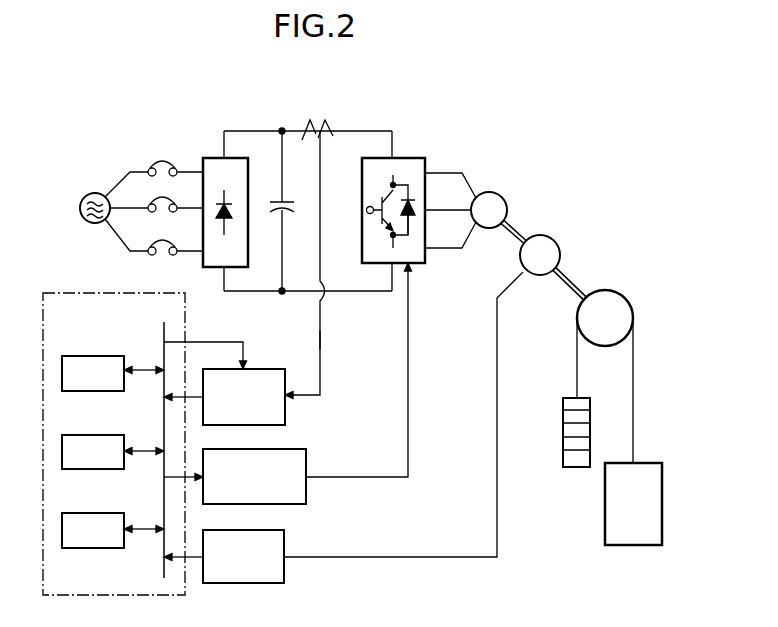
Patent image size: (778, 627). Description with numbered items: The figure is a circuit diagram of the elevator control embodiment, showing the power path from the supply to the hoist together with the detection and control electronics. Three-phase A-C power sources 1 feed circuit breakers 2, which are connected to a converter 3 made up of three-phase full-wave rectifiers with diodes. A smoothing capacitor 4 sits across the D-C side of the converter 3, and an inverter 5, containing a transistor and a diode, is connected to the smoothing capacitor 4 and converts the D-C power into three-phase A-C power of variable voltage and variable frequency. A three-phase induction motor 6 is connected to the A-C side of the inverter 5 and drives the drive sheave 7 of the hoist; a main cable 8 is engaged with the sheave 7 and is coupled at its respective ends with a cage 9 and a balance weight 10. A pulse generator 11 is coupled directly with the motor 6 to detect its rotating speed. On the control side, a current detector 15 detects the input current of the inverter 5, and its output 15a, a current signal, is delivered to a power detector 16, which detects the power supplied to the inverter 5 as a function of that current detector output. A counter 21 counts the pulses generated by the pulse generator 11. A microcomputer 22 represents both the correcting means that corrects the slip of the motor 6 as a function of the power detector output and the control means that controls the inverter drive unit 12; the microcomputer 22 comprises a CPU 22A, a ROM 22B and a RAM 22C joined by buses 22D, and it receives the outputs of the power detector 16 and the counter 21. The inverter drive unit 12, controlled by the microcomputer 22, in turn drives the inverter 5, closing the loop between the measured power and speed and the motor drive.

The three-phase A-C power sources 1 is at (95, 193).
The circuit breakers 2 is at (163, 160).
The converter 3 is at (211, 158).
The smoothing capacitor 4 is at (286, 211).
The inverter 5 is at (422, 158).
The three-phase induction motor 6 is at (498, 192).
The drive sheave 7 is at (608, 290).
The main cable 8 is at (633, 386).
The cage 9 is at (653, 463).
The balance weight 10 is at (563, 398).
The pulse generator 11 is at (555, 241).
The inverter drive unit 12 is at (300, 449).
The current detector 15 is at (323, 128).
The output of the current detector 15a is at (323, 340).
The power detector 16 is at (260, 369).
The counter 21 is at (292, 537).
The microcomputer 22 is at (63, 293).
The CPU 22A is at (73, 356).
The ROM 22B is at (73, 435).
The RAM 22C is at (73, 513).
The buses 22D is at (163, 330).